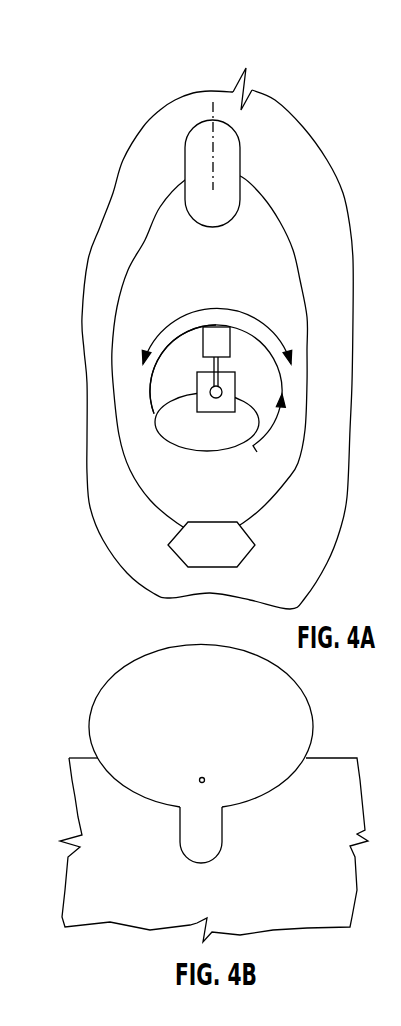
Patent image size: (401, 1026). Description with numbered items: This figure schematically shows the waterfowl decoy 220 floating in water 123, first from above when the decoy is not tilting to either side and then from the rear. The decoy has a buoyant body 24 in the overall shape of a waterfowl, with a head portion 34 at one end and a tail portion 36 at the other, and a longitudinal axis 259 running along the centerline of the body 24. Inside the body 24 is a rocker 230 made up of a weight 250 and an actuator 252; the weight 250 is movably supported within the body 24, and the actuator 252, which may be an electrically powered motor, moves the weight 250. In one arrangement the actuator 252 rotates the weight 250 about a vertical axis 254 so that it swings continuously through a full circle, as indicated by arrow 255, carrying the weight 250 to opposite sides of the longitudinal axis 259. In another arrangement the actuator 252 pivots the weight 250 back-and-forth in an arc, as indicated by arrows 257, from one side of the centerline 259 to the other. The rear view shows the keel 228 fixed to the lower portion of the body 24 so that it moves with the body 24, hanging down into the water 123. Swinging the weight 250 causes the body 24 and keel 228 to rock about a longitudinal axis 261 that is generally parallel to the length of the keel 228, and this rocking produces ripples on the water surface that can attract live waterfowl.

In FIG. 4A, the waterfowl decoy 220 is at (118, 157).
In FIG. 4B, the waterfowl decoy 220 is at (192, 720).
In FIG. 4A, the water 123 is at (110, 498).
In FIG. 4B, the water 123 is at (345, 758).
In FIG. 4A, the body 24 is at (263, 197).
In FIG. 4B, the body 24 is at (297, 773).
In FIG. 4A, the head portion 34 is at (240, 165).
In FIG. 4A, the longitudinal axis 259 is at (212, 116).
In FIG. 4A, the tail portion 36 is at (247, 549).
In FIG. 4A, the rocker 230 is at (213, 375).
In FIG. 4A, the arrows 257 is at (222, 308).
In FIG. 4A, the vertical axis 254 is at (217, 399).
In FIG. 4A, the actuator 252 is at (154, 414).
In FIG. 4A, the arrow 255 is at (205, 452).
In FIG. 4A, the weight 250 is at (203, 342).
In FIG. 4B, the keel 228 is at (223, 840).
In FIG. 4B, the longitudinal axis 261 is at (204, 778).